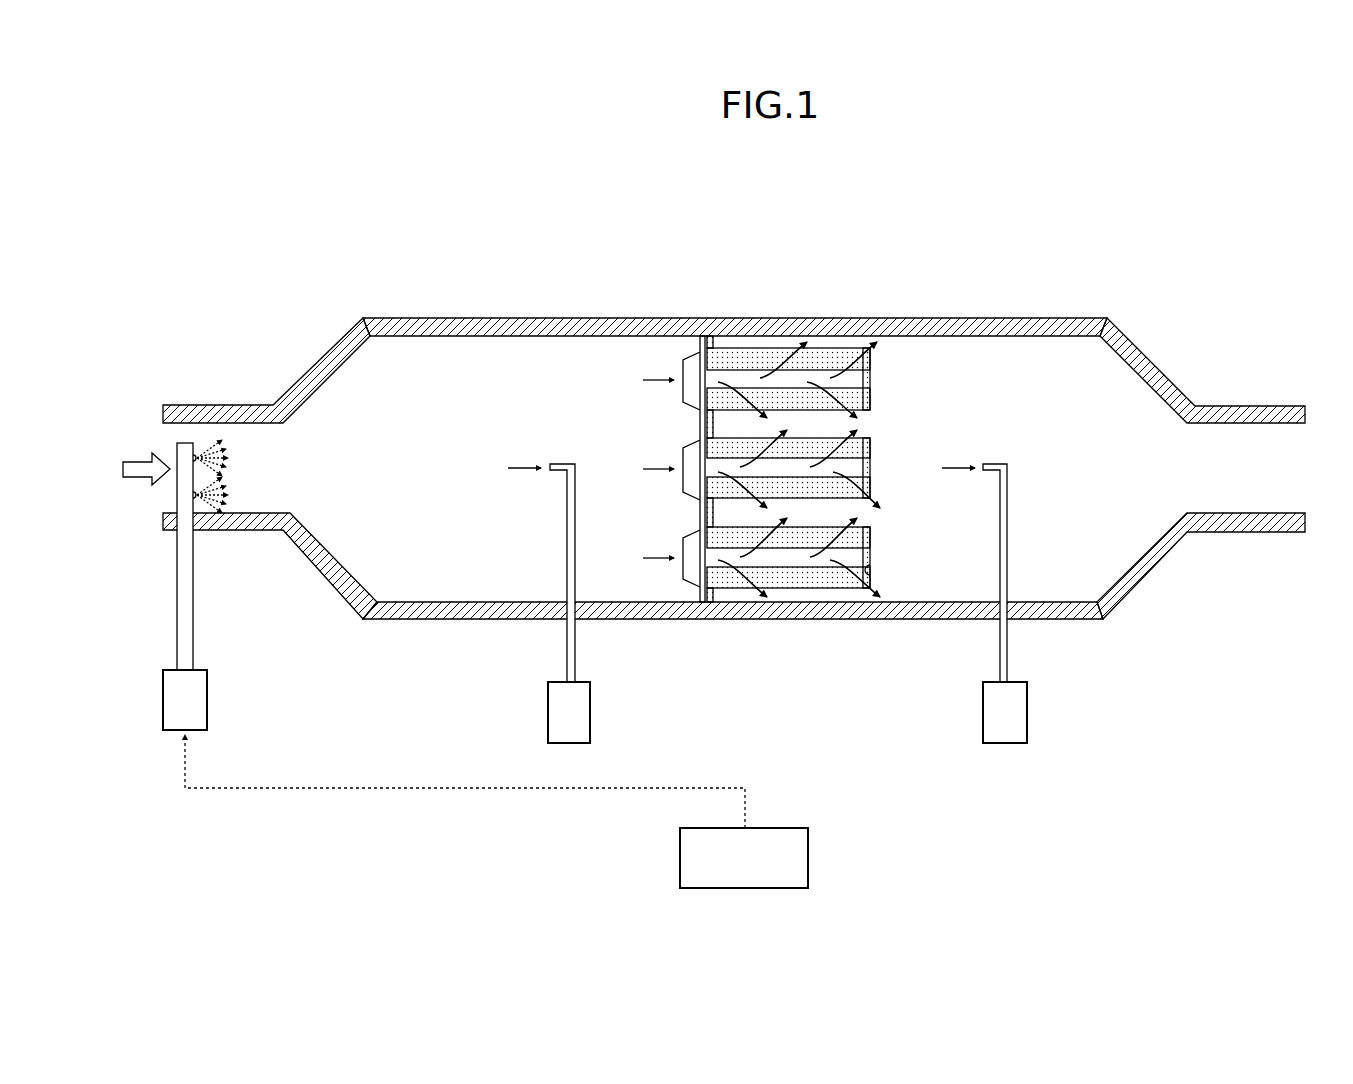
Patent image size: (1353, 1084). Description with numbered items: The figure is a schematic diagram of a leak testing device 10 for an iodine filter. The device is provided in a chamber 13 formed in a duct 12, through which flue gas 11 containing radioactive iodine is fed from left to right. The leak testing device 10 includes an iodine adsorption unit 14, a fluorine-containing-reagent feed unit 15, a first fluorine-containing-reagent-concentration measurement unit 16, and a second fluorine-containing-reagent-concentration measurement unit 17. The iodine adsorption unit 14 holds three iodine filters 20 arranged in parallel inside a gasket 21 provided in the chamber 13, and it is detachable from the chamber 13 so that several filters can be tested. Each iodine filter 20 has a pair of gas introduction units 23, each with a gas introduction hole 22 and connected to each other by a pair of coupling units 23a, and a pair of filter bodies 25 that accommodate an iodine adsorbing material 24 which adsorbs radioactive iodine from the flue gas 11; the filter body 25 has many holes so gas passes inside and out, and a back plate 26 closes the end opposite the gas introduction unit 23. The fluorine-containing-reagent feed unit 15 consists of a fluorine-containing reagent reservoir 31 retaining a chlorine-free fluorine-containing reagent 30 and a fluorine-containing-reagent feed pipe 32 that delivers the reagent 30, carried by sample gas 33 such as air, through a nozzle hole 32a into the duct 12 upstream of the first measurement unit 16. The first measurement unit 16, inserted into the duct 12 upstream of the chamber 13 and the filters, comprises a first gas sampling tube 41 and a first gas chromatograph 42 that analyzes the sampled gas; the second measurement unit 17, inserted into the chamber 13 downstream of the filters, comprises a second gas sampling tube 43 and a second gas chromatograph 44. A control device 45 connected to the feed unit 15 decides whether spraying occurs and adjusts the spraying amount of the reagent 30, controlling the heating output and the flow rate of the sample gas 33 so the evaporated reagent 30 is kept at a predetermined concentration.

The leak testing device 10 is at (918, 237).
The flue gas 11 is at (133, 455).
The duct 12 is at (266, 405).
The chamber 13 is at (545, 318).
The iodine adsorption unit 14 is at (646, 250).
The fluorine-containing-reagent feed unit 15 is at (255, 717).
The first fluorine-containing-reagent-concentration measurement unit 16 is at (493, 635).
The second fluorine-containing-reagent-concentration measurement unit 17 is at (1083, 633).
The iodine filter 20 is at (705, 268).
The gasket 21 is at (720, 598).
The gas introduction hole 22 is at (693, 560).
The gas introduction unit 23 is at (708, 348).
The coupling unit 23a is at (690, 352).
The iodine adsorbing material 24 is at (748, 356).
The filter body 25 is at (782, 350).
The back plate 26 is at (868, 568).
The fluorine-containing reagent 30 is at (294, 372).
The fluorine-containing reagent reservoir 31 is at (197, 700).
The fluorine-containing-reagent feed pipe 32 is at (185, 635).
The nozzle hole 32a is at (195, 455).
The sample gas 33 is at (225, 445).
The first gas sampling tube 41 is at (567, 645).
The first gas chromatograph 42 is at (548, 710).
The second gas sampling tube 43 is at (1007, 645).
The second gas chromatograph 44 is at (1027, 710).
The control device 45 is at (808, 855).